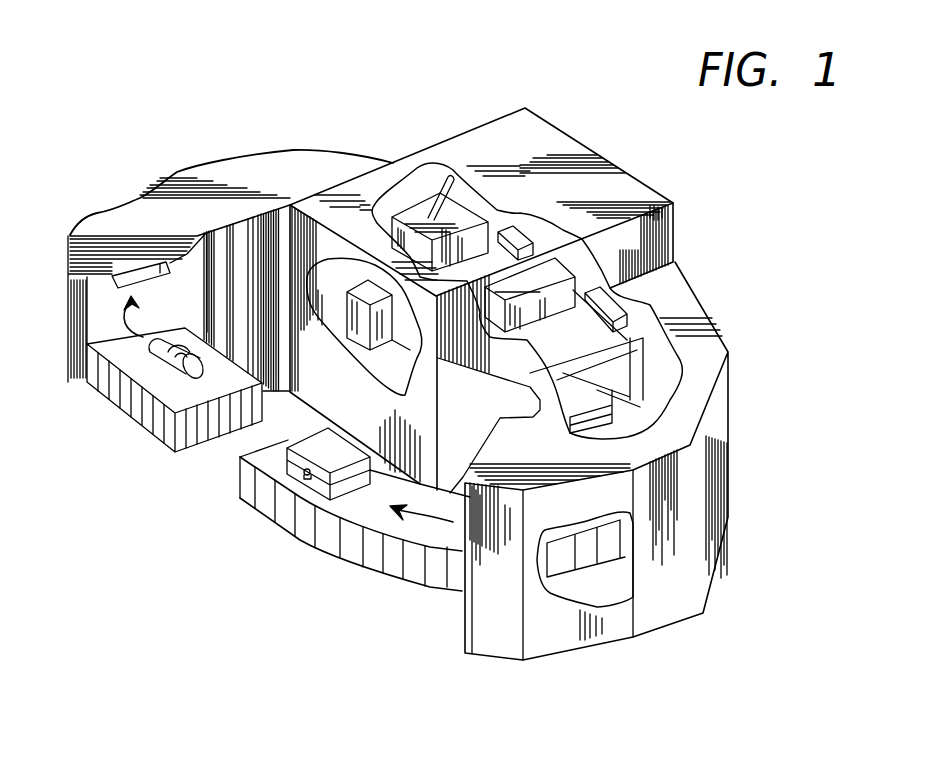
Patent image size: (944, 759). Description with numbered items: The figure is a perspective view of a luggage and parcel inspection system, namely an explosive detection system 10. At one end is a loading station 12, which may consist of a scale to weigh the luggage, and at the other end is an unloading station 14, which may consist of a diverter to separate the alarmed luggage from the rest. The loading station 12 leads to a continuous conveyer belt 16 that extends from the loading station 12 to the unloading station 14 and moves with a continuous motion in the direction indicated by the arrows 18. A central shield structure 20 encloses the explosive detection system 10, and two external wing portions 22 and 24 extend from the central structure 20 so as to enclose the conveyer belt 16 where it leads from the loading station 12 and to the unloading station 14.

The explosive detection system 10 is at (402, 103).
The loading station 12 is at (158, 391).
The unloading station 14 is at (280, 468).
The continuous conveyer belt 16 is at (122, 352).
The arrows 18 is at (157, 320).
The central shield structure 20 is at (578, 151).
The external wing portion 22 is at (225, 169).
The external wing portion 24 is at (690, 306).